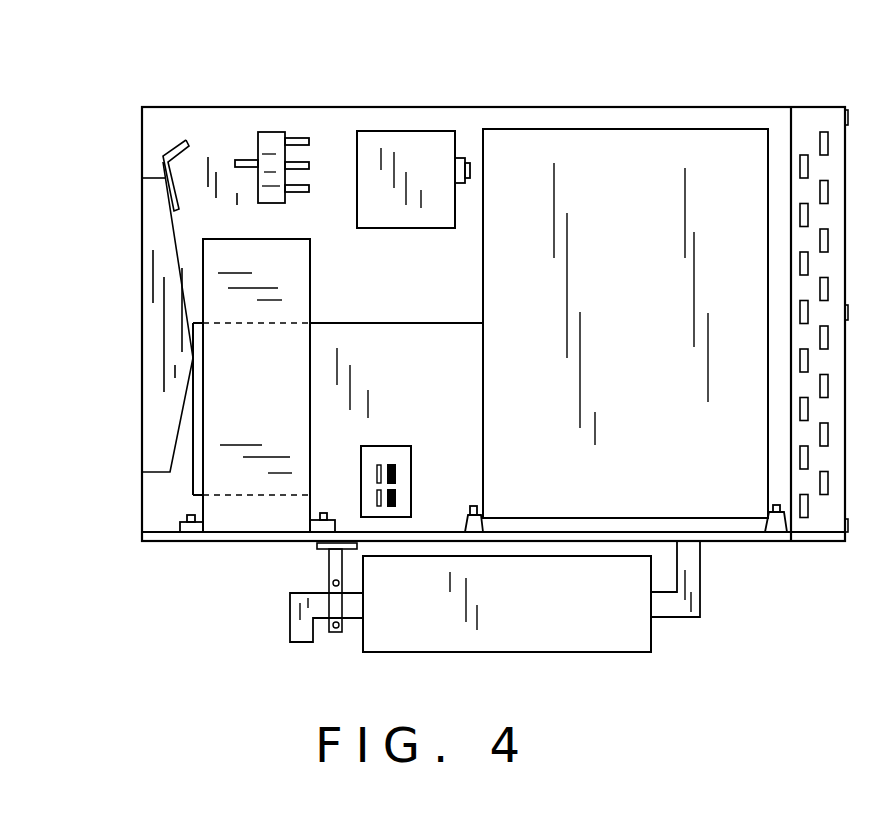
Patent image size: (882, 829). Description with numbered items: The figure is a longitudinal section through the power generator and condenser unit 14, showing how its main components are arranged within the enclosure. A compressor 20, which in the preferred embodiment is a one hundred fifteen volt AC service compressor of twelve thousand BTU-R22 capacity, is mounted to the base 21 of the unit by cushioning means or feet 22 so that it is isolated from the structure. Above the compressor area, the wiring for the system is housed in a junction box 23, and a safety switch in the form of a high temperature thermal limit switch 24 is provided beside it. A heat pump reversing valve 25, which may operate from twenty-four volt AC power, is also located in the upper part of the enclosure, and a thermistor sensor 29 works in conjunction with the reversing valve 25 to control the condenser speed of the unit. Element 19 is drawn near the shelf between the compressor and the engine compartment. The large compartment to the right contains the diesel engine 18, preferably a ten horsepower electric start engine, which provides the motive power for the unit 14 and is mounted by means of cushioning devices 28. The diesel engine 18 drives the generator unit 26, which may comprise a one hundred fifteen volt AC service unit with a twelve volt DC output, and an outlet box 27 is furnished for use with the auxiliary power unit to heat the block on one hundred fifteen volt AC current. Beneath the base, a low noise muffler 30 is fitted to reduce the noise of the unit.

The power generator and condenser unit 14 is at (720, 78).
The diesel engine 18 is at (651, 318).
The shelf 19 is at (373, 323).
The compressor 20 is at (273, 402).
The base 21 is at (232, 545).
The cushioning means or feet 22 is at (183, 533).
The junction box 23 is at (393, 212).
The high temperature thermal limit switch 24 is at (470, 169).
The heat pump reversing valve 25 is at (268, 131).
The generator unit 26 is at (412, 373).
The outlet box 27 is at (400, 460).
The cushioning devices 28 is at (478, 516).
The thermistor sensor 29 is at (170, 149).
The low noise muffler 30 is at (384, 632).